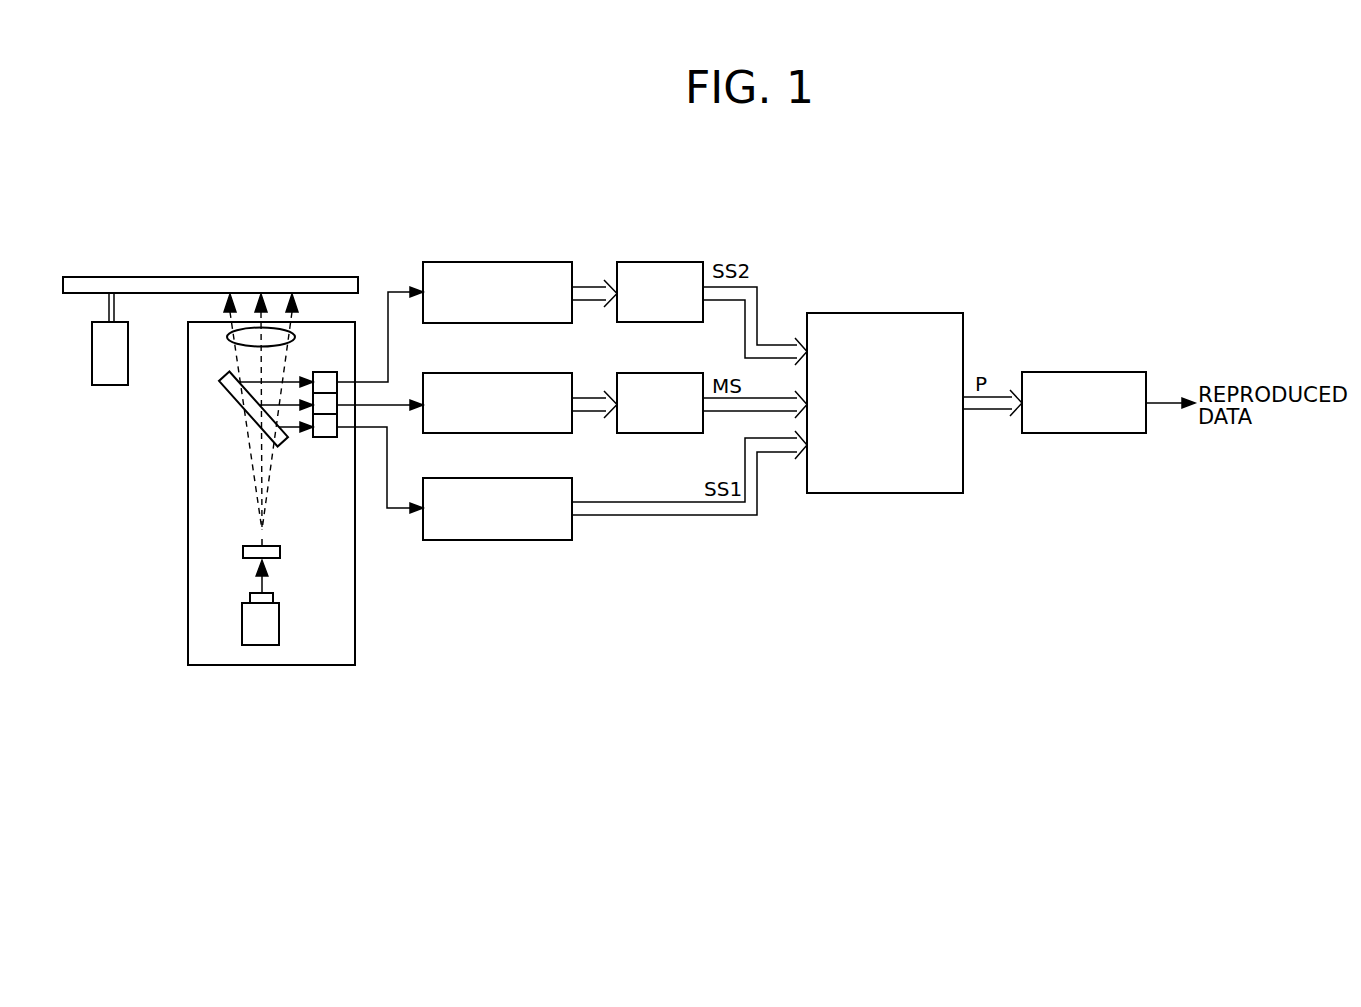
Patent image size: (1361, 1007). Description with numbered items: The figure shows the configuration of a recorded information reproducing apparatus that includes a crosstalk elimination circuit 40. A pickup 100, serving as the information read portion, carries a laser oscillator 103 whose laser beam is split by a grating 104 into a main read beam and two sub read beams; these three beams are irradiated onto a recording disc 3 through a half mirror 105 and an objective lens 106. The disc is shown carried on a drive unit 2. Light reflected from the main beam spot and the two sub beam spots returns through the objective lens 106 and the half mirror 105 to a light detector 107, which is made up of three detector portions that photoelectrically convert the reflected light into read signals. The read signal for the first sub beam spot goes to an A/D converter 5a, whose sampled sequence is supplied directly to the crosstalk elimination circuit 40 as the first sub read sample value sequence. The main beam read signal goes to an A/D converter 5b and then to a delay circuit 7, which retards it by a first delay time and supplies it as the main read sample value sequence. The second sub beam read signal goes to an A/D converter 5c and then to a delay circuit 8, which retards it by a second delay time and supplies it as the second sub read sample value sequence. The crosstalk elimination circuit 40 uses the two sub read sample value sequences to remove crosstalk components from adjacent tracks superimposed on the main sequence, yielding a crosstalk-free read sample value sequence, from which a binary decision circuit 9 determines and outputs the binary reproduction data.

The spindle motor 2 is at (92, 345).
The recording disc 3 is at (192, 277).
The A/D converter 5a is at (531, 478).
The A/D converter 5b is at (531, 373).
The A/D converter 5c is at (531, 262).
The delay circuit 7 is at (678, 373).
The delay circuit 8 is at (678, 262).
The binary decision circuit 9 is at (1112, 372).
The crosstalk elimination circuit 40 is at (915, 313).
The pickup 100 is at (252, 665).
The laser oscillator 103 is at (279, 618).
The grating 104 is at (280, 552).
The half mirror 105 is at (225, 386).
The objective lens 106 is at (294, 342).
The light detector 107 is at (325, 438).